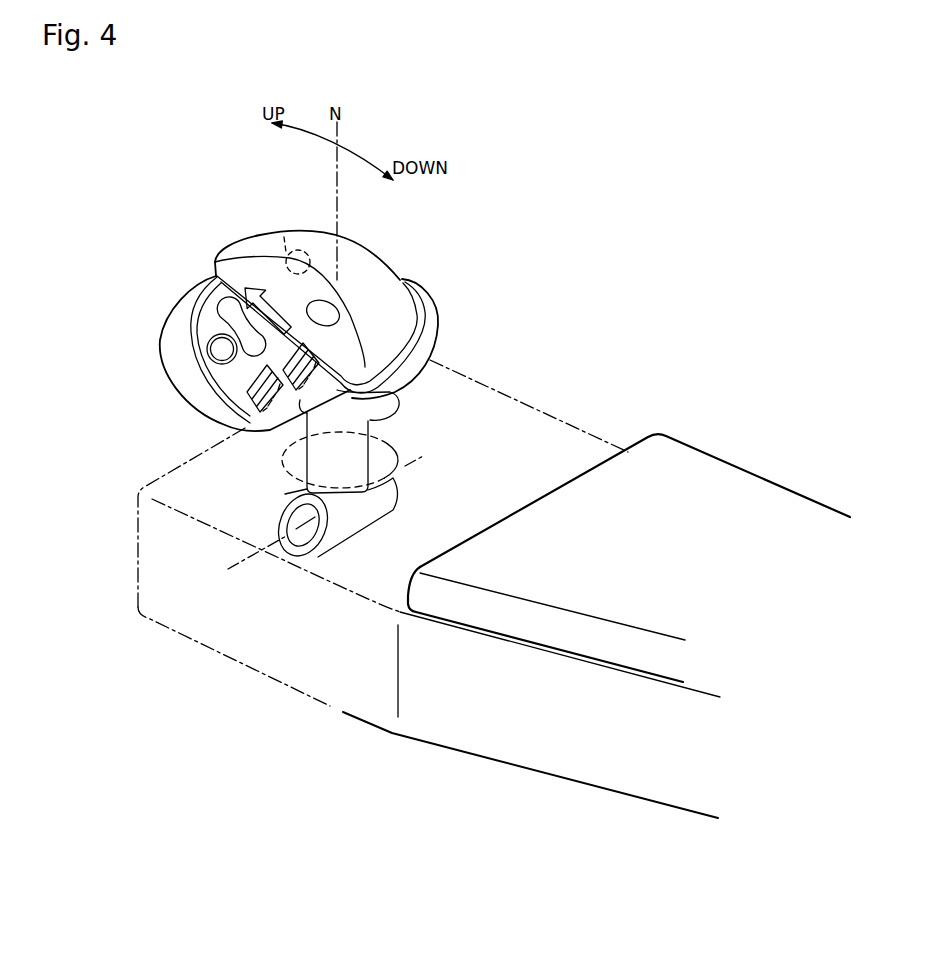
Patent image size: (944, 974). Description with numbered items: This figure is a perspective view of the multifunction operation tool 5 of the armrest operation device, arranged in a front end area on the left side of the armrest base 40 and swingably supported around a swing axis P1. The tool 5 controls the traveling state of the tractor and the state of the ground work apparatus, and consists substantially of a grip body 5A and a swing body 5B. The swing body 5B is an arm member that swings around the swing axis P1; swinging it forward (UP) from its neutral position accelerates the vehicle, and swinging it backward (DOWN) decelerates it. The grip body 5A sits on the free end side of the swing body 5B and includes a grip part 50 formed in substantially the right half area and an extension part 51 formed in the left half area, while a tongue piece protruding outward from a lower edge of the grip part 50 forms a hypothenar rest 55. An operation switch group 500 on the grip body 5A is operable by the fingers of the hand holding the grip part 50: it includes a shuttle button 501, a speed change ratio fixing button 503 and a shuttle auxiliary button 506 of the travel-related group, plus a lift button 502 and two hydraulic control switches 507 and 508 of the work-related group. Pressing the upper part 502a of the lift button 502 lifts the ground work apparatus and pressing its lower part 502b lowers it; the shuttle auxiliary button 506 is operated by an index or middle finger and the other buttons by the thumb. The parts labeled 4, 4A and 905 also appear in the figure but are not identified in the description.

The base / vehicle body part 4 is at (686, 378).
The base front surface 4A is at (522, 720).
The armrest base 40 is at (752, 491).
The multifunction operation tool 5 is at (117, 227).
The grip body 5A is at (441, 345).
The swing body 5B is at (373, 442).
The grip part 50 is at (395, 263).
The extension part 51 is at (166, 369).
The hypothenar rest 55 is at (438, 325).
The operation switch group 500 is at (211, 320).
The shuttle button 501 is at (212, 302).
The lift button 502 is at (218, 294).
The upper part of lift button 502a is at (230, 318).
The lower part of lift button 502b is at (247, 394).
The speed change ratio fixing button 503 is at (224, 366).
The shuttle auxiliary button 506 is at (291, 232).
The hydraulic control switch 507 is at (338, 392).
The hydraulic control switch 508 is at (250, 426).
The oval hole 905 is at (340, 316).
The swing axis P1 is at (248, 556).